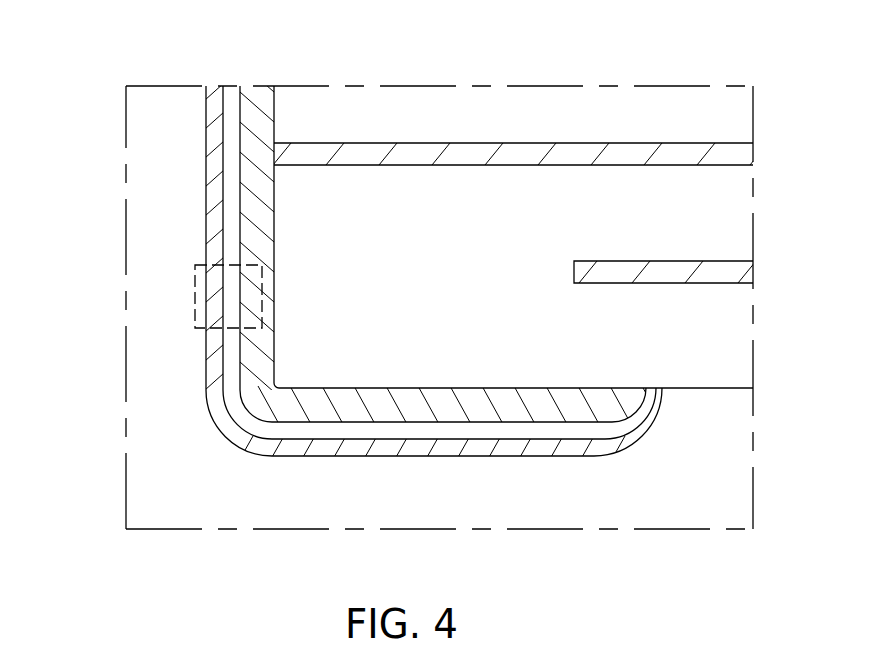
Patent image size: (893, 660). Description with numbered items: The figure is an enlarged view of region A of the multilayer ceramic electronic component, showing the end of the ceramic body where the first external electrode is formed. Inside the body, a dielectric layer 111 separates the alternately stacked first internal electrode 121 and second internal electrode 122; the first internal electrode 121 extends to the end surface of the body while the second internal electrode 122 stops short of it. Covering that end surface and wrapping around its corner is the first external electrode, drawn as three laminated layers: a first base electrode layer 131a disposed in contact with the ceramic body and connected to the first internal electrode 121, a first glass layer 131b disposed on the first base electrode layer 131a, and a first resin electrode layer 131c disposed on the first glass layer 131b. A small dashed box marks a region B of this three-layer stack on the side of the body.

The dielectric layer 111 is at (683, 213).
The first internal electrode 121 is at (488, 155).
The second internal electrode 122 is at (608, 268).
The first base electrode layer 131a is at (255, 175).
The first glass layer 131b is at (226, 193).
The first resin electrode layer 131c is at (206, 228).
The enlarged region B is at (196, 300).
The region A is at (455, 587).